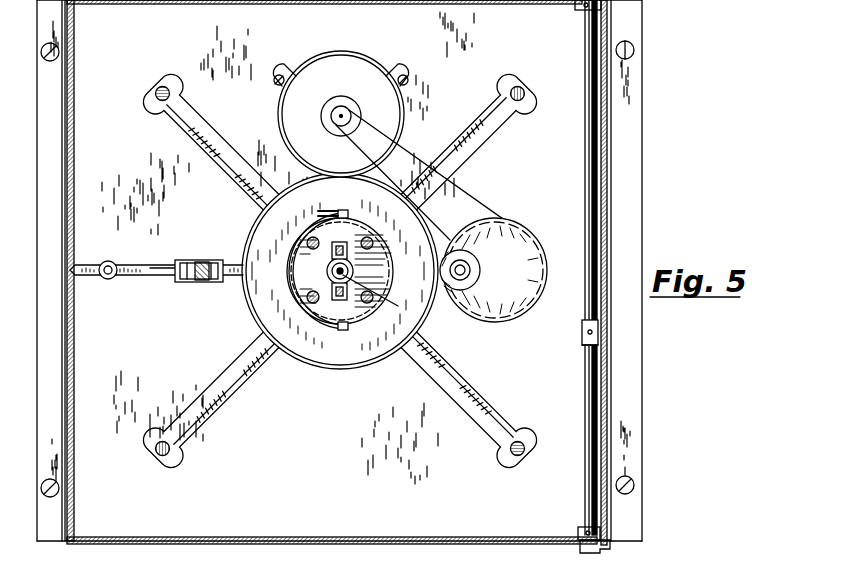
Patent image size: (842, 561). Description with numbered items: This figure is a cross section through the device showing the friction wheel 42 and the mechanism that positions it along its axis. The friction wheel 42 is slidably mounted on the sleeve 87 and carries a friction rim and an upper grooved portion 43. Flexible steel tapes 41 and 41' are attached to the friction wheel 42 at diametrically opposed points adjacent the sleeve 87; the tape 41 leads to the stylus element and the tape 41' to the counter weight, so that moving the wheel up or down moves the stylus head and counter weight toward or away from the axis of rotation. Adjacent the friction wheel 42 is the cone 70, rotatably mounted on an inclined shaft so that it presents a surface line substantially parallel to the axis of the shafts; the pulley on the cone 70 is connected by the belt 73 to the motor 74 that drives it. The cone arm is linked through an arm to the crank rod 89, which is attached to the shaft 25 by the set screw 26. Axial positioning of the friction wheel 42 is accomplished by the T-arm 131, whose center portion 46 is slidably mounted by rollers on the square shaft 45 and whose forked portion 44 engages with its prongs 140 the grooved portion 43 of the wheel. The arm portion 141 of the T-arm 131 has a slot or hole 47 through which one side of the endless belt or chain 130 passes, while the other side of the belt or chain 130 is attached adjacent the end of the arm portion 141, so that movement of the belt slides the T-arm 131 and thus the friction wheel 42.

The shaft 25 is at (590, 417).
The set screw 26 is at (583, 328).
The steel tape 41 is at (305, 252).
The steel tape 41' is at (359, 315).
The friction wheel 42 is at (256, 297).
The grooved portion 43 is at (455, 300).
The forked portion 44 is at (289, 263).
The square shaft 45 is at (204, 262).
The center portion 46 is at (182, 282).
The slot or hole 47 is at (118, 268).
The cone 70 is at (522, 252).
The belt 73 is at (475, 200).
The motor 74 is at (355, 68).
The sleeve 87 is at (381, 298).
The crank rod 89 is at (584, 342).
The belt or chain 130 is at (106, 262).
The T-arm 131 is at (160, 265).
The prongs 140 is at (320, 213).
The arm portion 141 is at (148, 276).